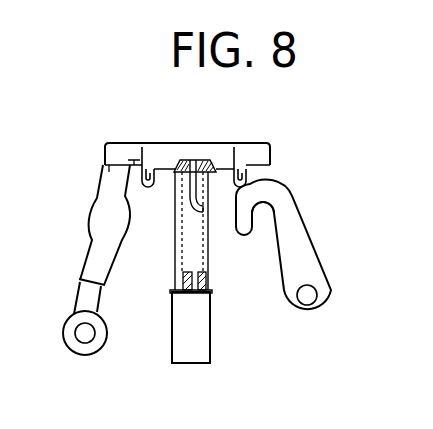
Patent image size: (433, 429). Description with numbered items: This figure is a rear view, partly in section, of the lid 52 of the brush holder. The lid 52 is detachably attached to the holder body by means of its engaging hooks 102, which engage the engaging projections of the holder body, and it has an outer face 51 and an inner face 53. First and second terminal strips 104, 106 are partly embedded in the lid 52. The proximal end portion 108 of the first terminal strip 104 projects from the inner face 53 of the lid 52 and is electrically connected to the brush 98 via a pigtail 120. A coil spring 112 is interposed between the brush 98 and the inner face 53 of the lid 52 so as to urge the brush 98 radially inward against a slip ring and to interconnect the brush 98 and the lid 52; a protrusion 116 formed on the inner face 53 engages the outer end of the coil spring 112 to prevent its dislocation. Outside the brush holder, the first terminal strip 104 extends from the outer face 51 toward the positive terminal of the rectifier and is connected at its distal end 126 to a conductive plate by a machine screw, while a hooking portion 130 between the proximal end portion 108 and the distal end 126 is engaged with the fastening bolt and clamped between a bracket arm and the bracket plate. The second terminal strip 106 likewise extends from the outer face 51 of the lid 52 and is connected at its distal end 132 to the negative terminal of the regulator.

The lid 52 is at (101, 138).
The outer face 51 is at (133, 147).
The inner face 53 is at (147, 188).
The engaging hooks 102 is at (131, 174).
The second terminal strip 106 is at (103, 232).
The distal end 132 is at (85, 345).
The protrusion 116 is at (199, 160).
The coil spring 112 is at (174, 287).
The proximal end portion 108 is at (198, 212).
The pigtail 120 is at (207, 284).
The brush 98 is at (202, 347).
The first terminal strip 104 is at (310, 260).
The hooking portion 130 is at (276, 214).
The distal end 126 is at (320, 292).